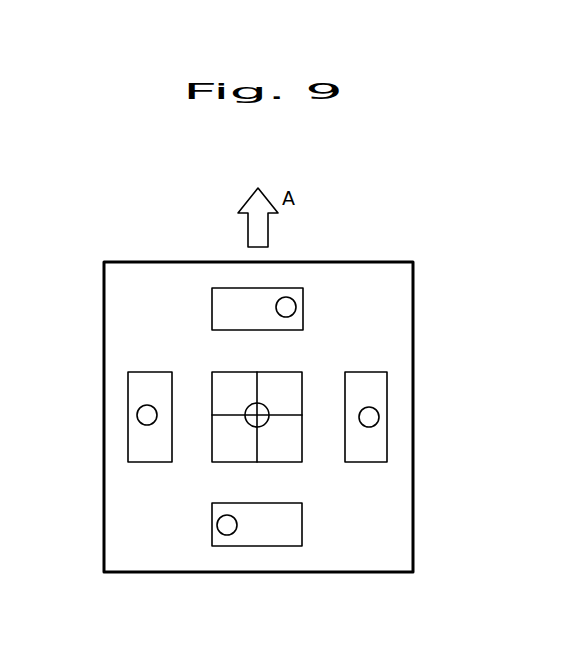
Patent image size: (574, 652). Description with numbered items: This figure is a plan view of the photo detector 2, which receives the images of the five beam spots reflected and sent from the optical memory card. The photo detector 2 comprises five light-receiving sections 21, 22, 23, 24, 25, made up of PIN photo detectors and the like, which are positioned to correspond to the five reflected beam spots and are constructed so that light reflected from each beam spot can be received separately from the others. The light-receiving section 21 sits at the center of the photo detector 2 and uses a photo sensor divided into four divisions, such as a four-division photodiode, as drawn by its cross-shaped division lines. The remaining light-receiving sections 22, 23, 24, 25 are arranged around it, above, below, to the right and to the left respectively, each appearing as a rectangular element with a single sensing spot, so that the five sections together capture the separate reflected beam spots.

The photo detector 2 is at (414, 338).
The light-receiving section 21 is at (286, 370).
The light-receiving section 22 is at (303, 300).
The light-receiving section 23 is at (302, 527).
The light-receiving section 24 is at (370, 462).
The light-receiving section 25 is at (152, 462).